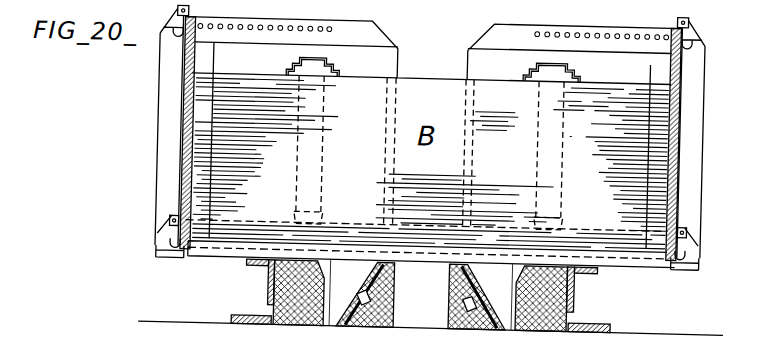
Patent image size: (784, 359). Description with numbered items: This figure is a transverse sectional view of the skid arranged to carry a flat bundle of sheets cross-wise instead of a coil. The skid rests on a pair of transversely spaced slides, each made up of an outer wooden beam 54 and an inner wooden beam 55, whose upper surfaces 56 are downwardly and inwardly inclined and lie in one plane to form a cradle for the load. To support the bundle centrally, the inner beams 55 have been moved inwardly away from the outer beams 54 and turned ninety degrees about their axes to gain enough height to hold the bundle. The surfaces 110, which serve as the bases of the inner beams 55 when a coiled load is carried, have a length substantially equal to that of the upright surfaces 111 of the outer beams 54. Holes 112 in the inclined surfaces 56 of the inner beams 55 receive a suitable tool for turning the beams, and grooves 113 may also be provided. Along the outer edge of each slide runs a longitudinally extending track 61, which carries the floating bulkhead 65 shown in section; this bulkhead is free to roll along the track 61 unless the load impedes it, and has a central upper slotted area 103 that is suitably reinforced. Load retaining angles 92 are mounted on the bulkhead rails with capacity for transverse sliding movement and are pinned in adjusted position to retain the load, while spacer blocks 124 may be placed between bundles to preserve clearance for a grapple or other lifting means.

The load retaining angle 92 is at (196, 52).
The floating bulkhead 65 is at (398, 16).
The central upper slotted area 103 is at (466, 54).
The spacer block 124 is at (582, 167).
The upper surface 56 is at (516, 319).
The track 61 is at (618, 270).
The upright surface 111 is at (584, 306).
The outer beam 54 is at (564, 321).
The inner beam 55 is at (495, 318).
The hole 112 is at (483, 294).
The groove 113 is at (454, 273).
The surface 110 is at (452, 295).